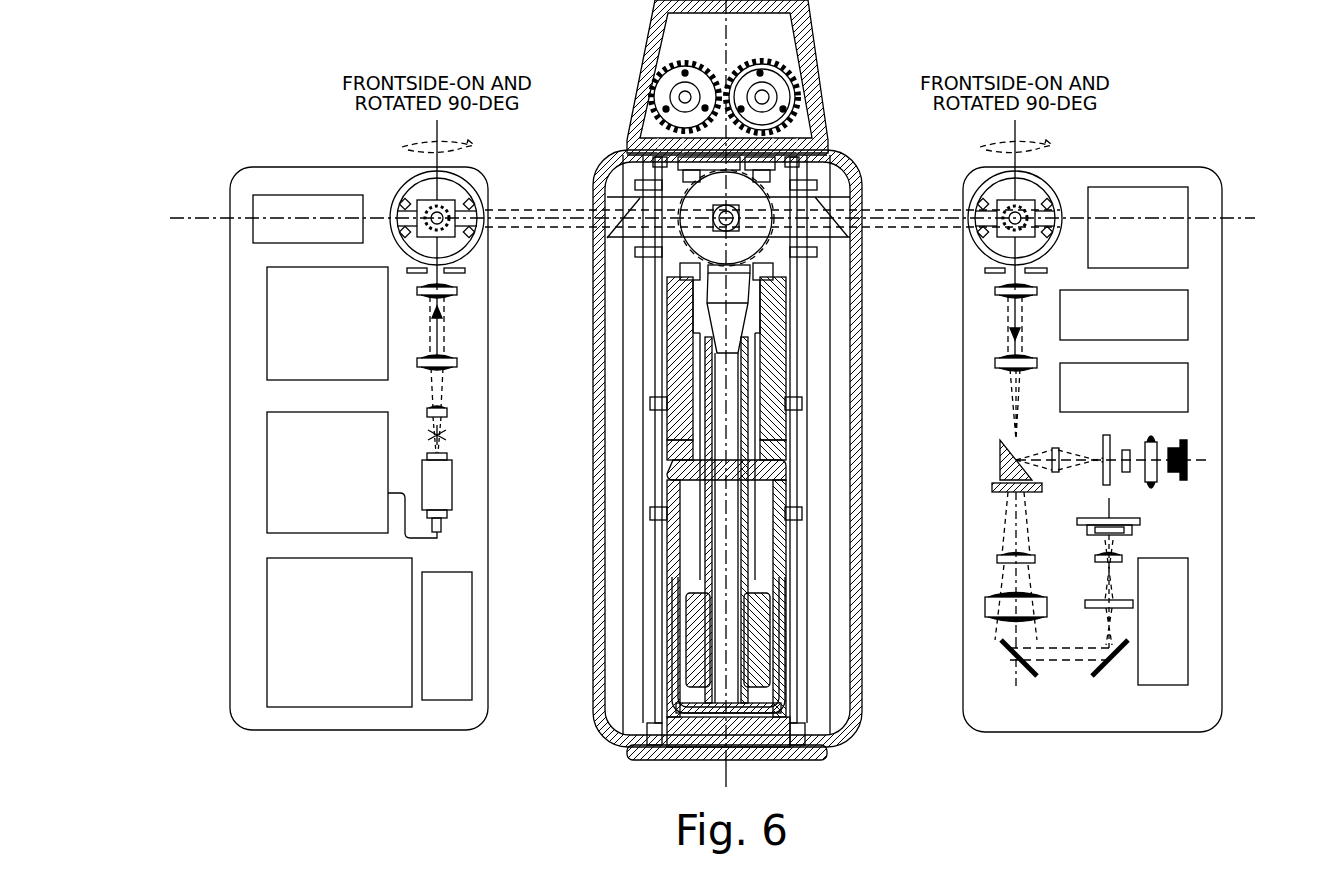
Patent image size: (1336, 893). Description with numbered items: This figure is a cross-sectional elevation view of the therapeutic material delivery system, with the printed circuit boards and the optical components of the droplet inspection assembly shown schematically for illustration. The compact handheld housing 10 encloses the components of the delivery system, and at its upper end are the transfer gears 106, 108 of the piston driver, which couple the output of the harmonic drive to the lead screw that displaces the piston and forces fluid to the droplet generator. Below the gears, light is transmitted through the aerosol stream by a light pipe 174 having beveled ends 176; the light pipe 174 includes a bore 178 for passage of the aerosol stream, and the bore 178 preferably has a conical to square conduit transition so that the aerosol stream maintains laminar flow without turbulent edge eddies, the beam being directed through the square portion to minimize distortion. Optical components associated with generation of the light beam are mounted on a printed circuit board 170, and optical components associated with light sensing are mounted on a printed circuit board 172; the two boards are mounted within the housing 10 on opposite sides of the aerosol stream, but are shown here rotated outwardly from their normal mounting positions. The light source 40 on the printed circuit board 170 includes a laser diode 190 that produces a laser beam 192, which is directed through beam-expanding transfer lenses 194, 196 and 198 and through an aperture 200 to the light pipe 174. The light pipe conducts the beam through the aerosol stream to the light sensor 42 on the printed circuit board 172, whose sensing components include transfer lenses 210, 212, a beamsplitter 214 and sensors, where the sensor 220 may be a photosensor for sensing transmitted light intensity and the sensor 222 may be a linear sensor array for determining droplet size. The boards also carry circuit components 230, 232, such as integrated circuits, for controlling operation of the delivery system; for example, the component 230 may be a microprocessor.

The compact handheld housing 10 is at (628, 46).
The light source 40 is at (406, 731).
The light sensor 42 is at (1122, 733).
The transfer gear 106 is at (760, 62).
The transfer gear 108 is at (690, 62).
The printed circuit board 170 is at (244, 552).
The printed circuit board 172 is at (1210, 553).
The light pipe 174 is at (425, 200).
The beveled ends 176 is at (607, 248).
The bore 178 is at (662, 200).
The laser diode 190 is at (452, 482).
The laser beam 192 is at (447, 435).
The beam-expanding transfer lens 194 is at (447, 411).
The beam-expanding transfer lens 196 is at (457, 363).
The beam-expanding transfer lens 198 is at (457, 291).
The aperture 200 is at (465, 270).
The transfer lens 210 is at (995, 290).
The transfer lens 212 is at (995, 363).
The beamsplitter 214 is at (1000, 466).
The sensor 220 is at (1190, 446).
The sensor 222 is at (1140, 522).
The circuit component 230 is at (263, 300).
The circuit component 232 is at (1188, 300).